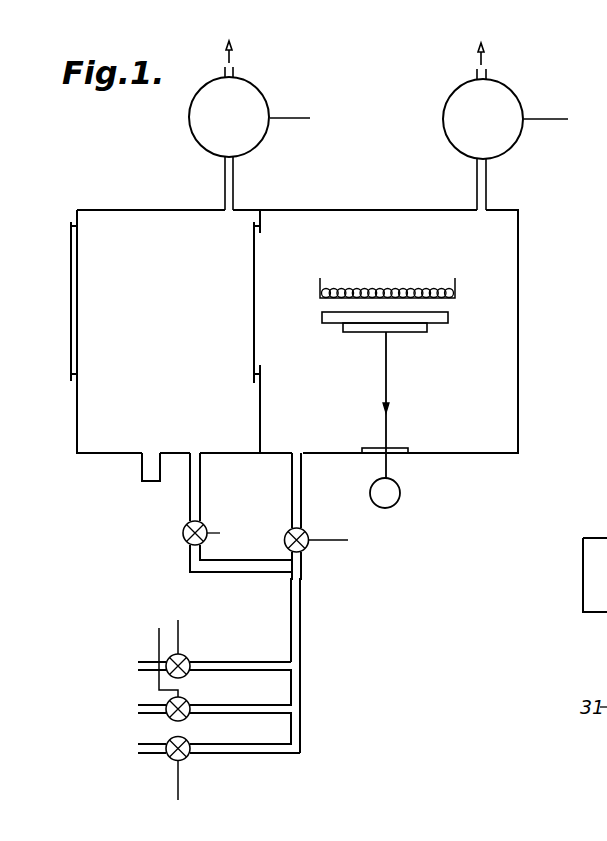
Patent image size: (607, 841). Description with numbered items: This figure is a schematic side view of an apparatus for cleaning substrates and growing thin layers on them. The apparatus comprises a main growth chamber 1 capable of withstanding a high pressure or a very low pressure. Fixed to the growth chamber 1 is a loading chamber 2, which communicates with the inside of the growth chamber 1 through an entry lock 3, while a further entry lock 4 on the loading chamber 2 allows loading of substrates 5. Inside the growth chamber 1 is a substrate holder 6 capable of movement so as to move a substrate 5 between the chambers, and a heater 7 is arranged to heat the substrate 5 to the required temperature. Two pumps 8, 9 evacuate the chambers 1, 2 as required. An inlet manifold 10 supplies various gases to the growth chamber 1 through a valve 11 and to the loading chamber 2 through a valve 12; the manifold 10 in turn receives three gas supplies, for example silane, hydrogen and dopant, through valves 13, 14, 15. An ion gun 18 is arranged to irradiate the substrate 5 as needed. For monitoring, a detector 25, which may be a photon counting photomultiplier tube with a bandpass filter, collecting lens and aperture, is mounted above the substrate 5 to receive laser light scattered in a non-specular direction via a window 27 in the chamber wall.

The main growth chamber 1 is at (470, 405).
The loading chamber 2 is at (166, 305).
The entry lock 3 is at (254, 283).
The entry lock 4 is at (71, 285).
The substrate 5 is at (368, 334).
The substrate holder 6 is at (449, 318).
The heater 7 is at (318, 285).
The pump 8 is at (443, 125).
The pump 9 is at (190, 121).
The inlet manifold 10 is at (302, 757).
The valve 11 is at (307, 531).
The valve 12 is at (183, 534).
The valve 13 is at (183, 760).
The valve 14 is at (187, 699).
The valve 15 is at (190, 655).
The ion gun 18 is at (131, 472).
The detector 25 is at (418, 483).
The window 27 is at (370, 448).